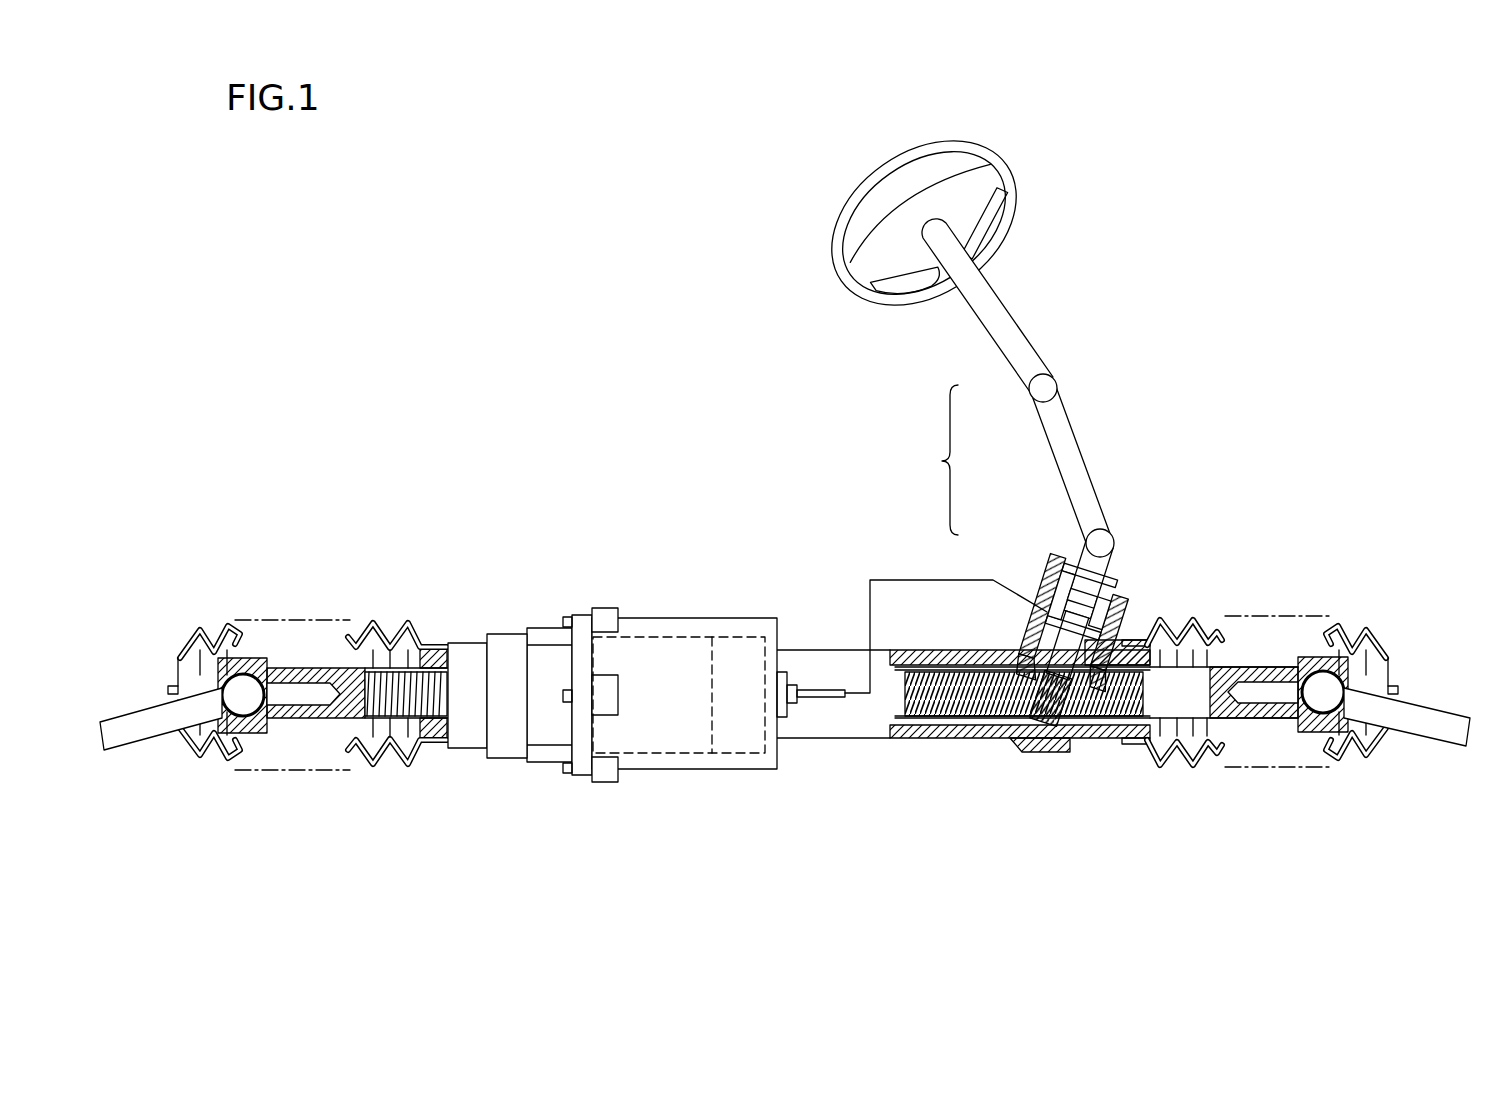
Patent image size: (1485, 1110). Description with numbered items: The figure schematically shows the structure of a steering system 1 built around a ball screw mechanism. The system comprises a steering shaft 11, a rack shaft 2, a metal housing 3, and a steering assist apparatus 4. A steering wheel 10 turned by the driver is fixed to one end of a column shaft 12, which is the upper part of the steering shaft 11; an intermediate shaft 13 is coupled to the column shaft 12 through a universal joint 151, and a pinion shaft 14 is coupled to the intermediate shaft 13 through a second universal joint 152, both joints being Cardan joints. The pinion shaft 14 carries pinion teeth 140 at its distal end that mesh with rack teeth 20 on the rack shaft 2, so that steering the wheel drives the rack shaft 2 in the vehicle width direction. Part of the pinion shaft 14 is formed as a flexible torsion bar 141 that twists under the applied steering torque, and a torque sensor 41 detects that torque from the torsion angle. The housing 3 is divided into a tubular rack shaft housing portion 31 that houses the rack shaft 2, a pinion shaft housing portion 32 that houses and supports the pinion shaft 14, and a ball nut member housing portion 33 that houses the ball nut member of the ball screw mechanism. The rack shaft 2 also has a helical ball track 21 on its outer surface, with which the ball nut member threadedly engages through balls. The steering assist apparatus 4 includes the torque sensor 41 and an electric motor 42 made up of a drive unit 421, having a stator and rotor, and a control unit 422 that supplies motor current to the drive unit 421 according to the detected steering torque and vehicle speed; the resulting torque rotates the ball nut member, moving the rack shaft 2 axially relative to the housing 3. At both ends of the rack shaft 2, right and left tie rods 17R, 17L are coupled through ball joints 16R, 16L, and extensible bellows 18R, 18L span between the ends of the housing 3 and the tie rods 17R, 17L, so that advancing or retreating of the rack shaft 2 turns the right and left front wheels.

The steering system 1 is at (1288, 497).
The steering wheel 10 is at (1005, 178).
The steering shaft 11 is at (935, 460).
The column shaft 12 is at (1015, 370).
The universal joint 151 is at (1037, 393).
The intermediate shaft 13 is at (1050, 438).
The universal joint 152 is at (1095, 542).
The pinion shaft 14 is at (1080, 557).
The torsion bar 141 is at (1047, 593).
The torque sensor 41 is at (1055, 608).
The pinion shaft housing portion 32 is at (1120, 590).
The rack shaft 2 is at (1173, 657).
The rack teeth 20 is at (1083, 715).
The pinion teeth 140 is at (1040, 724).
The rack shaft housing portion 31 is at (853, 740).
The housing 3 is at (551, 608).
The ball nut member housing portion 33 is at (512, 632).
The ball track 21 is at (408, 660).
The steering assist apparatus 4 is at (781, 709).
The electric motor 42 is at (672, 615).
The drive unit 421 is at (688, 745).
The control unit 422 is at (747, 745).
The ball joint 16L is at (1347, 667).
The bellows 18L is at (1392, 652).
The tie rod 17L is at (1412, 723).
The ball joint 16R is at (218, 632).
The bellows 18R is at (178, 657).
The tie rod 17R is at (135, 728).